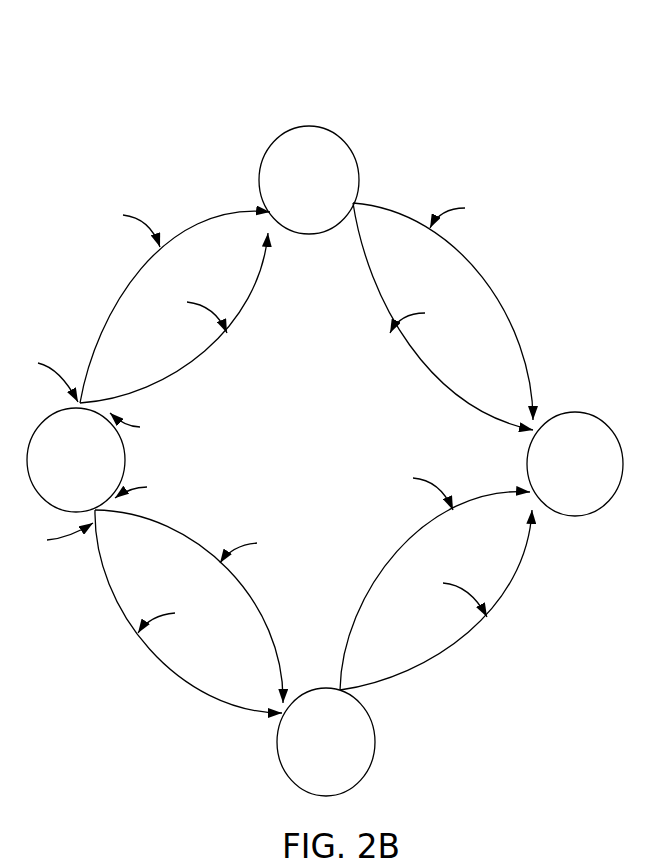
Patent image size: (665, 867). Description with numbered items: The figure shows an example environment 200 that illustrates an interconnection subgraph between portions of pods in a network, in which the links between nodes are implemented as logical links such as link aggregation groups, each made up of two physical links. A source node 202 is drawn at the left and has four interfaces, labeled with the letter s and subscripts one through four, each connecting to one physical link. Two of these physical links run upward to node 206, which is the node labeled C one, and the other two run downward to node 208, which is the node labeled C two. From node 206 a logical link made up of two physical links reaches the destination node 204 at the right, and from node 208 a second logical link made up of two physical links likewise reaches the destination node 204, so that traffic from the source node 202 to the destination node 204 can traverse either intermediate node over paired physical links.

The example environment 200 is at (582, 72).
The source node 202 is at (57, 500).
The destination node 204 is at (556, 502).
The node C1 206 is at (290, 220).
The node C2 208 is at (307, 780).